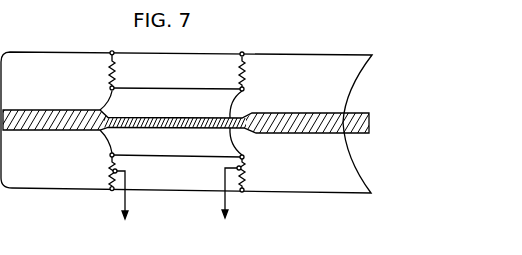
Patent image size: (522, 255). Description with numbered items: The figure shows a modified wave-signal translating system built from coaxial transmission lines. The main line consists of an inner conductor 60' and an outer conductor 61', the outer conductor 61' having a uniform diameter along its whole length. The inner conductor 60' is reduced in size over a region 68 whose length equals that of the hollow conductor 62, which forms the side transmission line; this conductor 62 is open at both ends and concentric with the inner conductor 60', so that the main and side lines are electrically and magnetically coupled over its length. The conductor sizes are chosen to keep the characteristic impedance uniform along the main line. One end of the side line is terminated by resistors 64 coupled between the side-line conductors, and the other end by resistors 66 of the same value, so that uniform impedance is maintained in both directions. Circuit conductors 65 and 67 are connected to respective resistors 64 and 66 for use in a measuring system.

The inner conductor 60' is at (188, 108).
The outer conductor 61' is at (186, 110).
The hollow conductor 62 is at (161, 87).
The resistor 64 is at (109, 71).
The circuit conductor 65 is at (124, 210).
The resistor 66 is at (247, 69).
The circuit conductor 67 is at (224, 212).
The region 68 is at (143, 117).